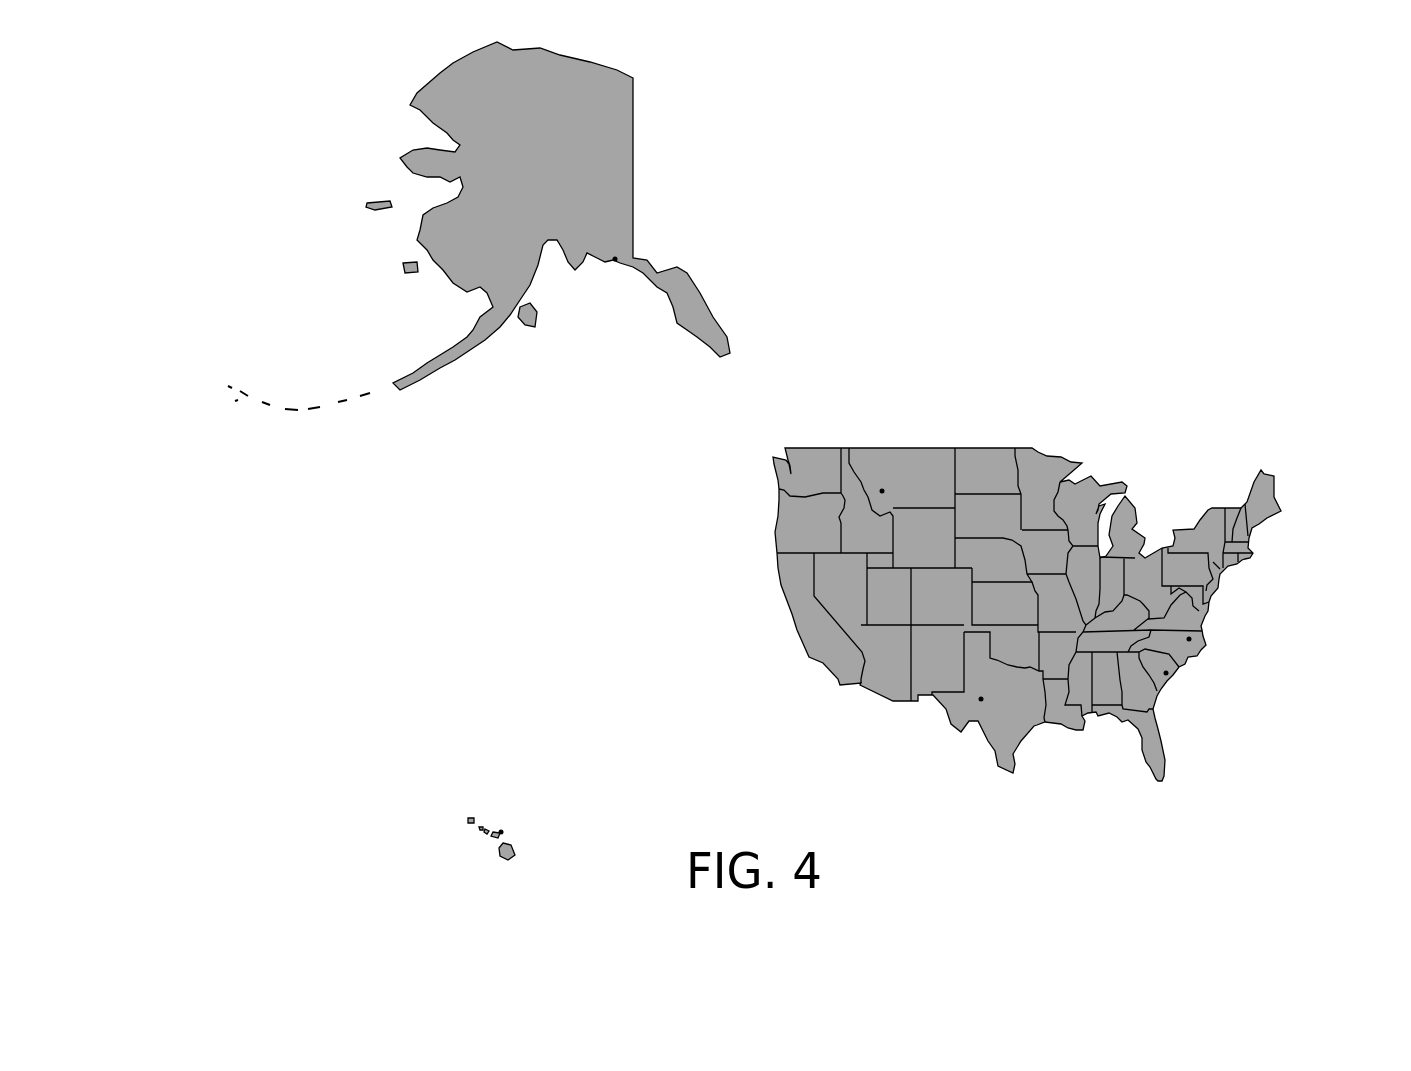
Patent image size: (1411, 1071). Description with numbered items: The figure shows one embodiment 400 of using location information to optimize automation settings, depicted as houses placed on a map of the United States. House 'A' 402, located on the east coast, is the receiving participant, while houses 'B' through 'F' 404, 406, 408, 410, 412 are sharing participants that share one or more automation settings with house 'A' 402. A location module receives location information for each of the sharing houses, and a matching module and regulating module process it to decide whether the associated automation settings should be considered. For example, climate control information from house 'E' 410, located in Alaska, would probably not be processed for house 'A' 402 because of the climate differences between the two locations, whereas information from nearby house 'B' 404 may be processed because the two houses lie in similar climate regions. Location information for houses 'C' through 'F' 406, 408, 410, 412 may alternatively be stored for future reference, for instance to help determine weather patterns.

The embodiment of using location information to optimize automation settings 400 is at (202, 85).
The house 'A' 402 is at (1208, 627).
The house 'B' 404 is at (1180, 690).
The house 'C' 406 is at (978, 720).
The house 'D' 408 is at (889, 468).
The house 'E' 410 is at (606, 281).
The house 'F' 412 is at (509, 814).